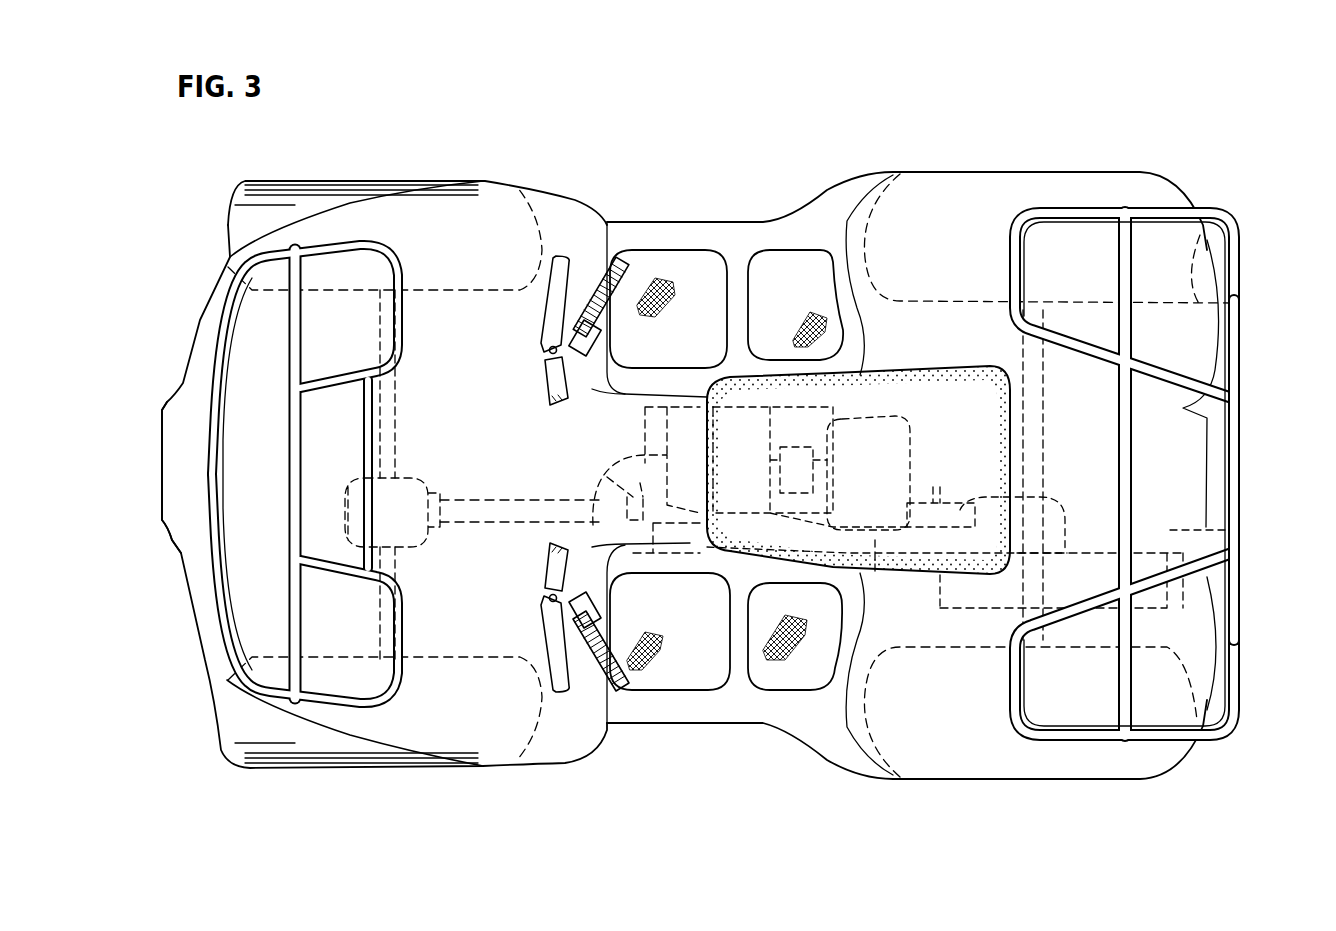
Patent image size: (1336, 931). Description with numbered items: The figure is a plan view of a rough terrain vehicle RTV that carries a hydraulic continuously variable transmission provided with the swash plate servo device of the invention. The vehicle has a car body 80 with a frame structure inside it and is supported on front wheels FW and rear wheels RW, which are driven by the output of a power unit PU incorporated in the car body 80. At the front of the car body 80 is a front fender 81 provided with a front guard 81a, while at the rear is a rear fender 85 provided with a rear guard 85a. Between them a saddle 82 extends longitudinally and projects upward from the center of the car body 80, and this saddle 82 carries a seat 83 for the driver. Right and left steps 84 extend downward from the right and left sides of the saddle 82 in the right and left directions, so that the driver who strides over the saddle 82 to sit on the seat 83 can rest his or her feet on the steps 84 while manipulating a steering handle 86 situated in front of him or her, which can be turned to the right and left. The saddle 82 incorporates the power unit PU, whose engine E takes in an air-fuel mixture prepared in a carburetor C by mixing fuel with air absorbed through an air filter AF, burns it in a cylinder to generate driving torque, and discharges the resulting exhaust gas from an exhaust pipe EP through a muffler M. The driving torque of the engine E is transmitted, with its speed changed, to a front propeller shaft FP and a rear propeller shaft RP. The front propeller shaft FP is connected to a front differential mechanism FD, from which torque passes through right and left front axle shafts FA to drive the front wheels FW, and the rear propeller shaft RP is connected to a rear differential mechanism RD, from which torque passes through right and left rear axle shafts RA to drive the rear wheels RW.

The car body 80 is at (866, 170).
The front fender 81 is at (247, 577).
The front guard 81a is at (212, 512).
The saddle 82 is at (627, 403).
The seat 83 is at (920, 368).
The steps 84 is at (708, 272).
The rear fender 85 is at (1164, 474).
The rear guard 85a is at (1241, 352).
The steering handle 86 is at (547, 247).
The front wheels FW is at (227, 220).
The rear wheels RW is at (1238, 312).
The front axle shafts FA is at (392, 383).
The front differential mechanism FD is at (412, 478).
The front propeller shaft FP is at (484, 522).
The engine E is at (645, 452).
The carburetor C is at (800, 447).
The air filter AF is at (913, 423).
The power unit PU is at (760, 402).
The rear propeller shaft RP is at (933, 505).
The rear differential mechanism RD is at (1060, 502).
The rear axle shafts RA is at (1045, 409).
The muffler M is at (1243, 530).
The exhaust pipe EP is at (693, 550).
The rough terrain vehicle RTV is at (1157, 158).